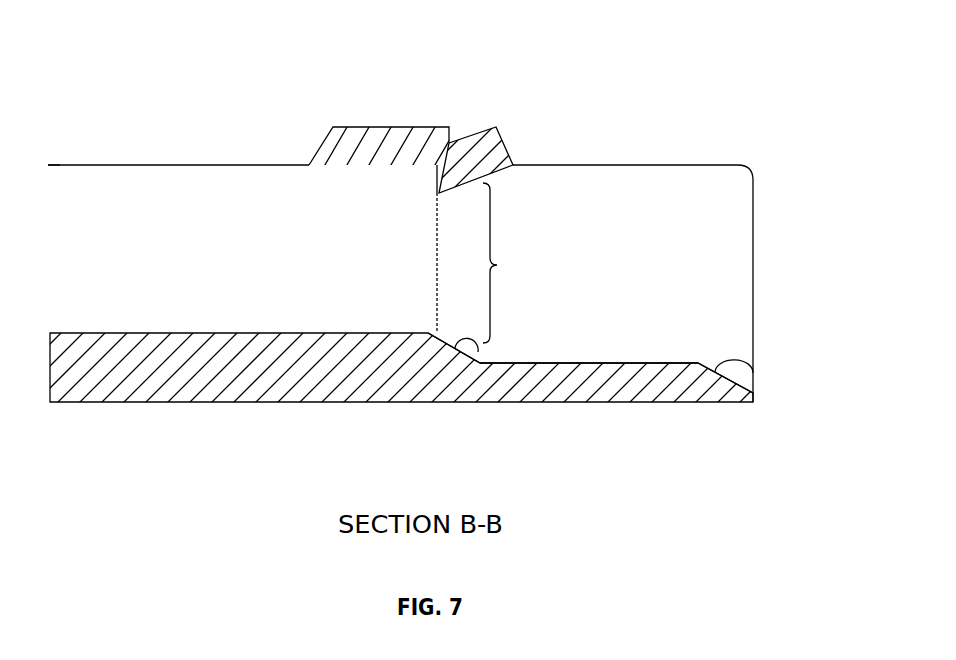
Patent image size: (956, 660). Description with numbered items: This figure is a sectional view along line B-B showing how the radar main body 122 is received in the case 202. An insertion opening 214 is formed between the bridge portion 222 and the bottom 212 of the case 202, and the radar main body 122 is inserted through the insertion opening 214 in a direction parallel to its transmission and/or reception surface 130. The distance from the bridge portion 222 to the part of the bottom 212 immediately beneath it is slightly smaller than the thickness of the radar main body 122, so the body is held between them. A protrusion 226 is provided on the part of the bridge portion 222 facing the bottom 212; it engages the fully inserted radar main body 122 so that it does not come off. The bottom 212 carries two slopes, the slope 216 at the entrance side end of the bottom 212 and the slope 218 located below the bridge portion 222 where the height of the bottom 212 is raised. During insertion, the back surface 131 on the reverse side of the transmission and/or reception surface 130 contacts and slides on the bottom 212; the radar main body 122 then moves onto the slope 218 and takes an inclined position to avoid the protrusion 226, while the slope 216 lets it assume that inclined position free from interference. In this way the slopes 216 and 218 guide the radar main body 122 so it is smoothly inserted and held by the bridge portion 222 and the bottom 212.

The radar main body 122 is at (210, 200).
The transmission and/or reception surface 130 is at (104, 165).
The back surface 131 is at (179, 345).
The case 202 is at (540, 119).
The bottom 212 is at (585, 363).
The insertion opening 214 is at (513, 263).
The slope 216 is at (757, 375).
The slope 218 is at (448, 402).
The bridge portion 222 is at (404, 127).
The protrusion 226 is at (433, 183).